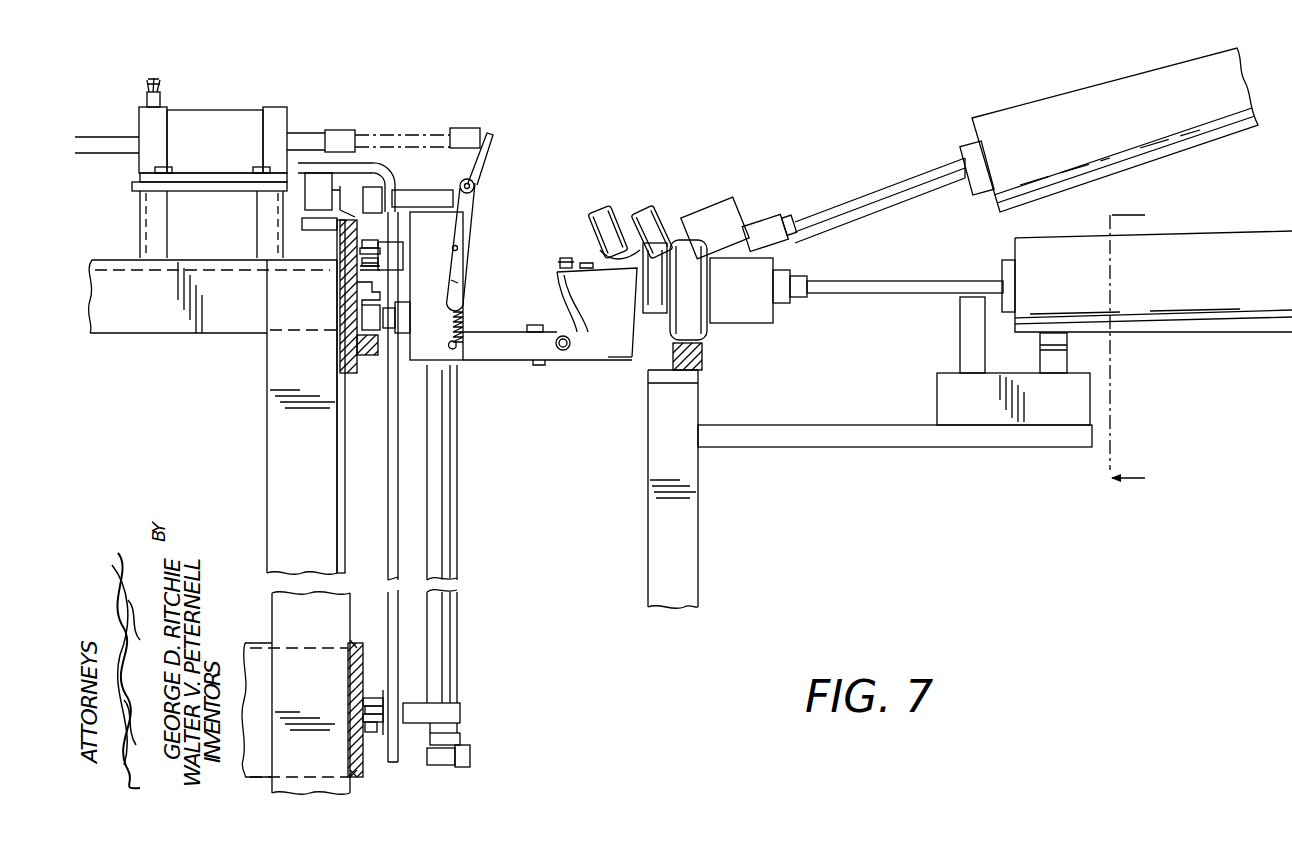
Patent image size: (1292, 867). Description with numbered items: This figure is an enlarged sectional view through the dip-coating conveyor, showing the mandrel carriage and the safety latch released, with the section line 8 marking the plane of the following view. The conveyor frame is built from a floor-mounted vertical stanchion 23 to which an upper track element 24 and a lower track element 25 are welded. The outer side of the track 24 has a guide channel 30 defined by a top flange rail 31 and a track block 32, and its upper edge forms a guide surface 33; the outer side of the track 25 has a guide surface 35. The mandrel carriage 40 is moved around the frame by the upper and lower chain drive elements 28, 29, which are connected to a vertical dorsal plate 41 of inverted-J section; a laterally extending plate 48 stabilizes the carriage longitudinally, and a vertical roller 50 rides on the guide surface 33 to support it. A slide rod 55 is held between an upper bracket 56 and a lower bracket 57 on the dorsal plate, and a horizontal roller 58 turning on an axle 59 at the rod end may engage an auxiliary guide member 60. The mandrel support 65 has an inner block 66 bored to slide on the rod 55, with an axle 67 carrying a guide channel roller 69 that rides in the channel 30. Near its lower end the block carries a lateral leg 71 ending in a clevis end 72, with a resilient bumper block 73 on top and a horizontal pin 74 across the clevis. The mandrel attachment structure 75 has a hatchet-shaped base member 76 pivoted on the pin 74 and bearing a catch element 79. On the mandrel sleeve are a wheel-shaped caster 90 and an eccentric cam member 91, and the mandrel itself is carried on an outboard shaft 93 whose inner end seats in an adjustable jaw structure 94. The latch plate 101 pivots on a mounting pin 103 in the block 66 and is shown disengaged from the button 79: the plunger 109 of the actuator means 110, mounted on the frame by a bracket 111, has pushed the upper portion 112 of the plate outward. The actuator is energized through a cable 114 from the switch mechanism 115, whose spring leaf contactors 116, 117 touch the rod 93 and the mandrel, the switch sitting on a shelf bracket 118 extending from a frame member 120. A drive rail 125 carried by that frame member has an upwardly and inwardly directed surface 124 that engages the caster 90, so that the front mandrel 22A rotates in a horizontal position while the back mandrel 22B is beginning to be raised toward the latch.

The section line 8— 8 is at (1115, 346).
The front mandrel 22A is at (1225, 315).
The back mandrel 22B is at (1120, 78).
The vertical stanchion element 23 is at (266, 442).
The upper horizontal track element 24 is at (343, 375).
The lower horizontal track element 25 is at (358, 782).
The upper conveyor drive element 28 is at (380, 258).
The lower conveyor drive element 29 is at (374, 736).
The guide channel 30 is at (350, 313).
The top flange rail 31 is at (348, 290).
The track block 32 is at (352, 362).
The guide surface 33 is at (335, 222).
The guide surface 35 is at (363, 645).
The mandrel carriage 40 is at (402, 487).
The dorsal plate 41 is at (372, 163).
The laterally extending plate 48 is at (404, 250).
The vertical roller 50 is at (390, 181).
The slide rod 55 is at (437, 430).
The upper bracket 56 is at (437, 190).
The lower bracket 57 is at (462, 713).
The horizontal roller 58 is at (440, 758).
The axle 59 is at (462, 741).
The auxiliary guide member 60 is at (472, 758).
The mandrel support 65 is at (485, 338).
The inner block 66 is at (440, 350).
The axle 67 is at (410, 316).
The guide channel roller 69 is at (348, 338).
The lateral leg 71 is at (484, 352).
The clevis end 72 is at (585, 360).
The resilient bumper block 73 is at (537, 325).
The horizontal pin 74 is at (560, 352).
The mandrel attachment structure 75 is at (578, 302).
The base member 76 is at (624, 362).
The catch element 79 is at (580, 258).
The caster 90 is at (687, 214).
The eccentric cam member 91 is at (650, 215).
The outboard shaft 93 is at (877, 190).
The adjustable jaw structure 94 is at (783, 324).
The latch plate 101 is at (480, 192).
The mounting pin 103 is at (460, 246).
The plunger 109 is at (345, 131).
The actuator means 110 is at (228, 115).
The bracket 111 is at (260, 224).
The upper portion of latch plate 112 is at (482, 140).
The cable 114 is at (161, 96).
The switch mechanism 115 is at (1010, 410).
The spring leaf contactor 116 is at (958, 344).
The spring leaf contactor 117 is at (1068, 350).
The shelf bracket 118 is at (880, 436).
The conveyor frame member 120 is at (700, 470).
The drive rail surface 124 is at (595, 222).
The drive rail 125 is at (618, 205).